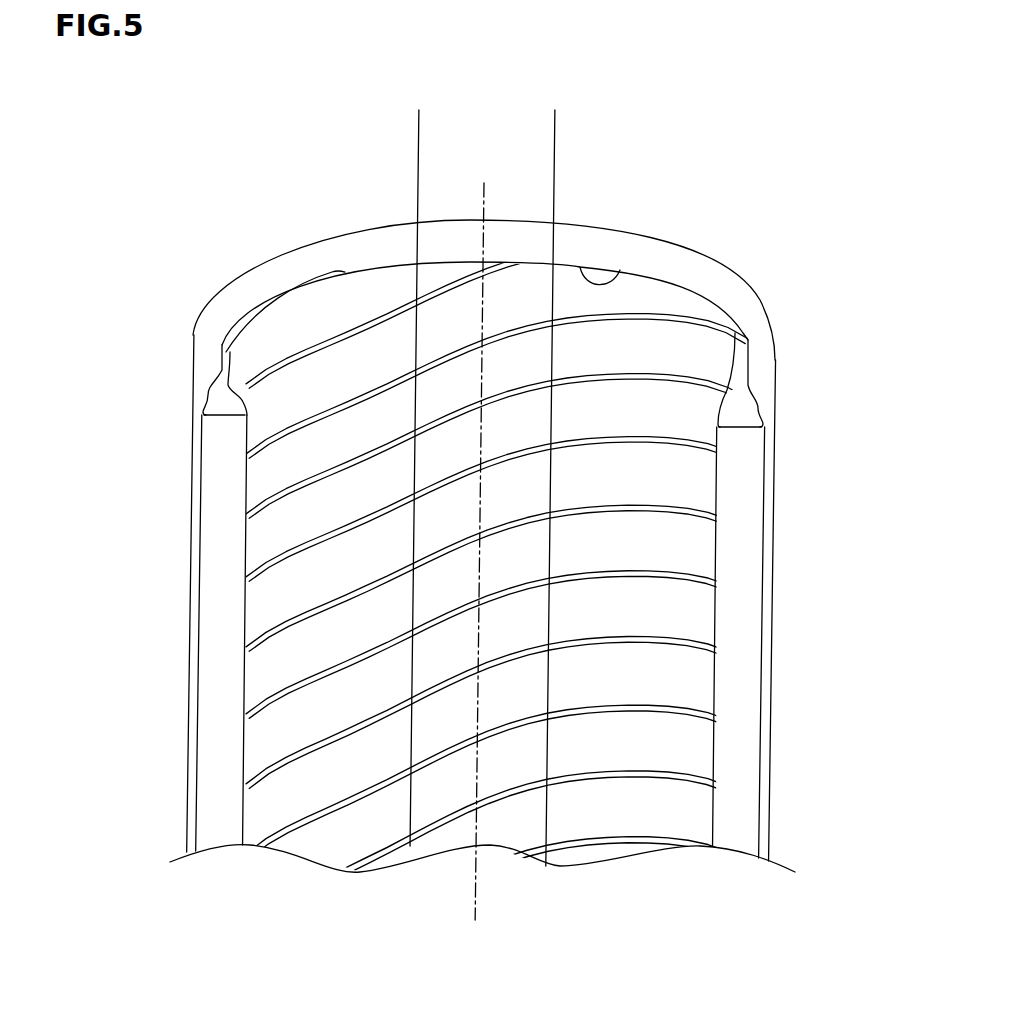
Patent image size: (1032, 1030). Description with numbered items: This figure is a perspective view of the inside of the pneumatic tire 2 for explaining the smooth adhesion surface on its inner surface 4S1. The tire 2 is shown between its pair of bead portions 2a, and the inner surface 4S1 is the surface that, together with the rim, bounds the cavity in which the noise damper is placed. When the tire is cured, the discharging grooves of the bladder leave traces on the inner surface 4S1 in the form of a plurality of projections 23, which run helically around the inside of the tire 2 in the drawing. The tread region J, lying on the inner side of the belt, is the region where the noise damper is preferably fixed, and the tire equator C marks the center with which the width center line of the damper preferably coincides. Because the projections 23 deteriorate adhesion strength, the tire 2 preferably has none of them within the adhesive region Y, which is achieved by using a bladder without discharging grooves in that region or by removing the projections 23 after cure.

The pneumatic tire 2 is at (737, 277).
The bead portion 2a is at (225, 493).
The inner surface of the tire 4S1 is at (647, 335).
The projection 23 is at (630, 440).
The tread region J is at (628, 270).
The tire equator C is at (486, 197).
The adhesive region Y is at (554, 102).